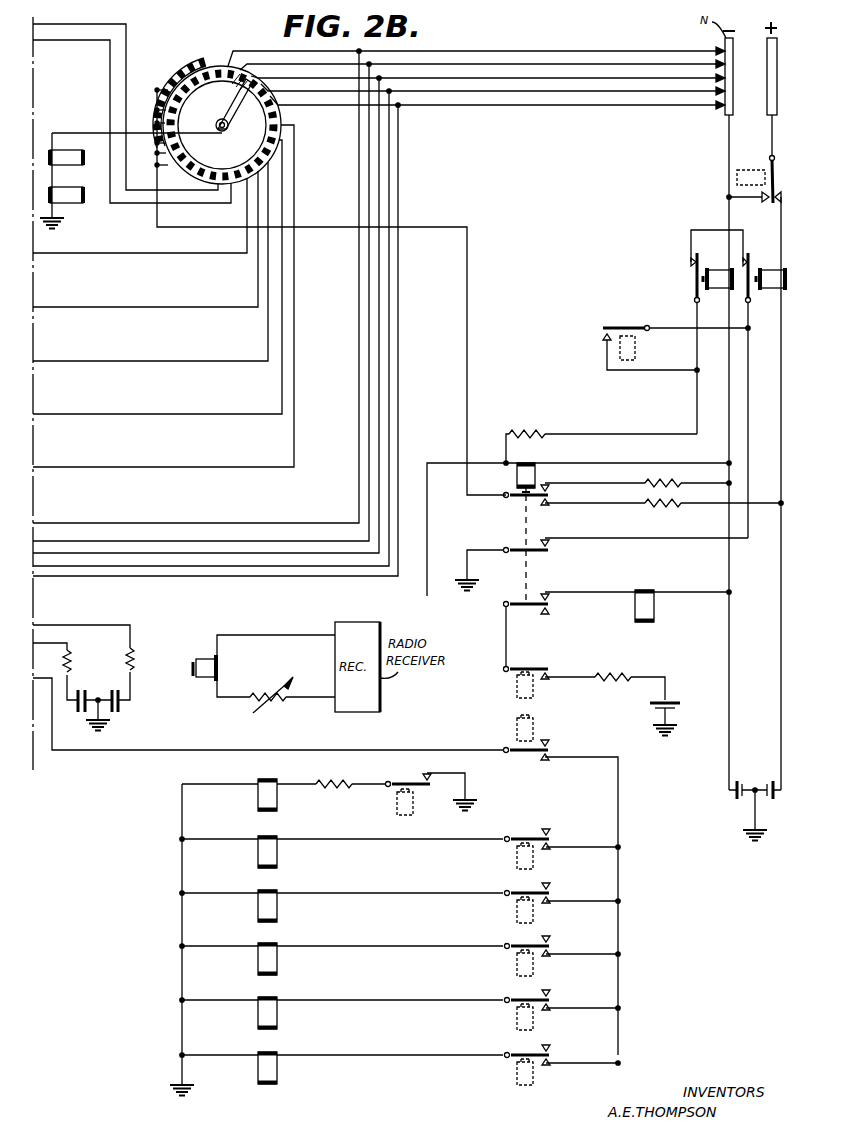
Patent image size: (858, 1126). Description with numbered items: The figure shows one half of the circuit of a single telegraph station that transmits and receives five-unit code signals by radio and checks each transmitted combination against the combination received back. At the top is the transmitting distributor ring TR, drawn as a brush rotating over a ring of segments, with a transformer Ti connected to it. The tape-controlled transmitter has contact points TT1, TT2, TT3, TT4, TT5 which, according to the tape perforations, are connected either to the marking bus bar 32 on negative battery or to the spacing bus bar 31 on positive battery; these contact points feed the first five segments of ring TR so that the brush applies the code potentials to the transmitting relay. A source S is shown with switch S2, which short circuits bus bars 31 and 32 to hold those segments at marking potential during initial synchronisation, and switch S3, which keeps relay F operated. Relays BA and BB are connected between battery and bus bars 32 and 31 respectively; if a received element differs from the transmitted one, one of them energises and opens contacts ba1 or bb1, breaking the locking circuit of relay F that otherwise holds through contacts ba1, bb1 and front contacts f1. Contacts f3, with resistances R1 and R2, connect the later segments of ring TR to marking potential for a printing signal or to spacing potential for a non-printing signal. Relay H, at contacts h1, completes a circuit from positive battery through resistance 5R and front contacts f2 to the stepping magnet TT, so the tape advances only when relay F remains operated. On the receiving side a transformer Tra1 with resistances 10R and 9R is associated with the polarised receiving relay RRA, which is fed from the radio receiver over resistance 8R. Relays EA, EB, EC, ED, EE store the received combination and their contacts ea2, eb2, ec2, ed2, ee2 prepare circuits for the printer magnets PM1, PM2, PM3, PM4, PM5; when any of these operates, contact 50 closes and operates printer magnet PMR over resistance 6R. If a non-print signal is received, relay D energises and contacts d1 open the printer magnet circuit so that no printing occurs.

The transmitting distributor ring TR is at (217, 121).
The transformer Ti is at (131, 181).
The transmitter contact point TT1 is at (718, 48).
The transmitter contact point TT2 is at (718, 62).
The transmitter contact point TT3 is at (718, 76).
The transmitter contact point TT4 is at (718, 89).
The transmitter contact point TT5 is at (718, 103).
The marking bus bar 32 is at (734, 100).
The spacing bus bar 31 is at (777, 96).
The source / switch coil S is at (777, 42).
The switch S2 is at (775, 180).
The switch S3 is at (605, 333).
The contacts of relay BA ba1 is at (690, 248).
The contacts of relay BB bb1 is at (748, 255).
The comparison relay BA is at (716, 286).
The comparison relay BB is at (760, 288).
The relay F is at (516, 476).
The front contacts of relay F f1 is at (551, 546).
The front contacts of relay F f2 is at (551, 604).
The contacts of relay F f3 is at (551, 492).
The resistor R1 is at (660, 480).
The resistor R2 is at (672, 506).
The stepping magnet TT is at (636, 617).
The contacts of relay H h1 is at (575, 662).
The resistance 5R is at (622, 662).
The relay H is at (516, 687).
The relay D is at (516, 727).
The contacts of relay D d1 is at (551, 750).
The transformer Tra1 is at (81, 678).
The resistance 10R is at (71, 666).
The resistance 9R is at (133, 665).
The polarised receiving relay RRA is at (220, 658).
The resistance 8R is at (292, 692).
The printer magnet PMR is at (278, 804).
The resistance 6R is at (344, 768).
The contact 50 is at (425, 779).
The printer magnet PM1 is at (278, 858).
The printer magnet PM2 is at (278, 912).
The printer magnet PM3 is at (278, 965).
The printer magnet PM4 is at (278, 1019).
The printer magnet PM5 is at (278, 1074).
The storage relay EA is at (516, 855).
The storage relay EB is at (516, 909).
The storage relay EC is at (516, 962).
The storage relay ED is at (516, 1016).
The storage relay EE is at (516, 1071).
The contacts of relay EA ea2 is at (552, 838).
The contacts of relay EB eb2 is at (552, 892).
The contacts of relay EC ec2 is at (552, 945).
The contacts of relay ED ed2 is at (552, 999).
The contacts of relay EE ee2 is at (552, 1054).